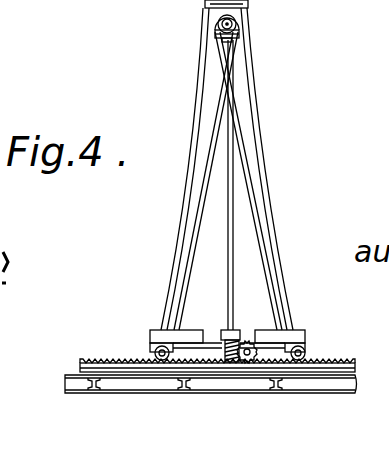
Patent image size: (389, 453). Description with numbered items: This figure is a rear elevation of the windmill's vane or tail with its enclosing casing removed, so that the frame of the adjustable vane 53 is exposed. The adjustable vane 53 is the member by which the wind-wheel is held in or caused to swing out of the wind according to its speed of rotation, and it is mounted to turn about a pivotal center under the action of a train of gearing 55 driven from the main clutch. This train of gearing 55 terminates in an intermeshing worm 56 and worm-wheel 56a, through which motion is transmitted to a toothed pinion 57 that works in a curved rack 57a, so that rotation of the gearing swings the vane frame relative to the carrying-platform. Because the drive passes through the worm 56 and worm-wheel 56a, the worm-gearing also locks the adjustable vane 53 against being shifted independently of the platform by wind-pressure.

The adjustable vane 53 is at (262, 144).
The train of gearing 55 is at (237, 24).
The worm 56 is at (250, 340).
The worm-wheel 56a is at (218, 333).
The toothed pinion 57 is at (292, 337).
The curved rack 57a is at (103, 361).